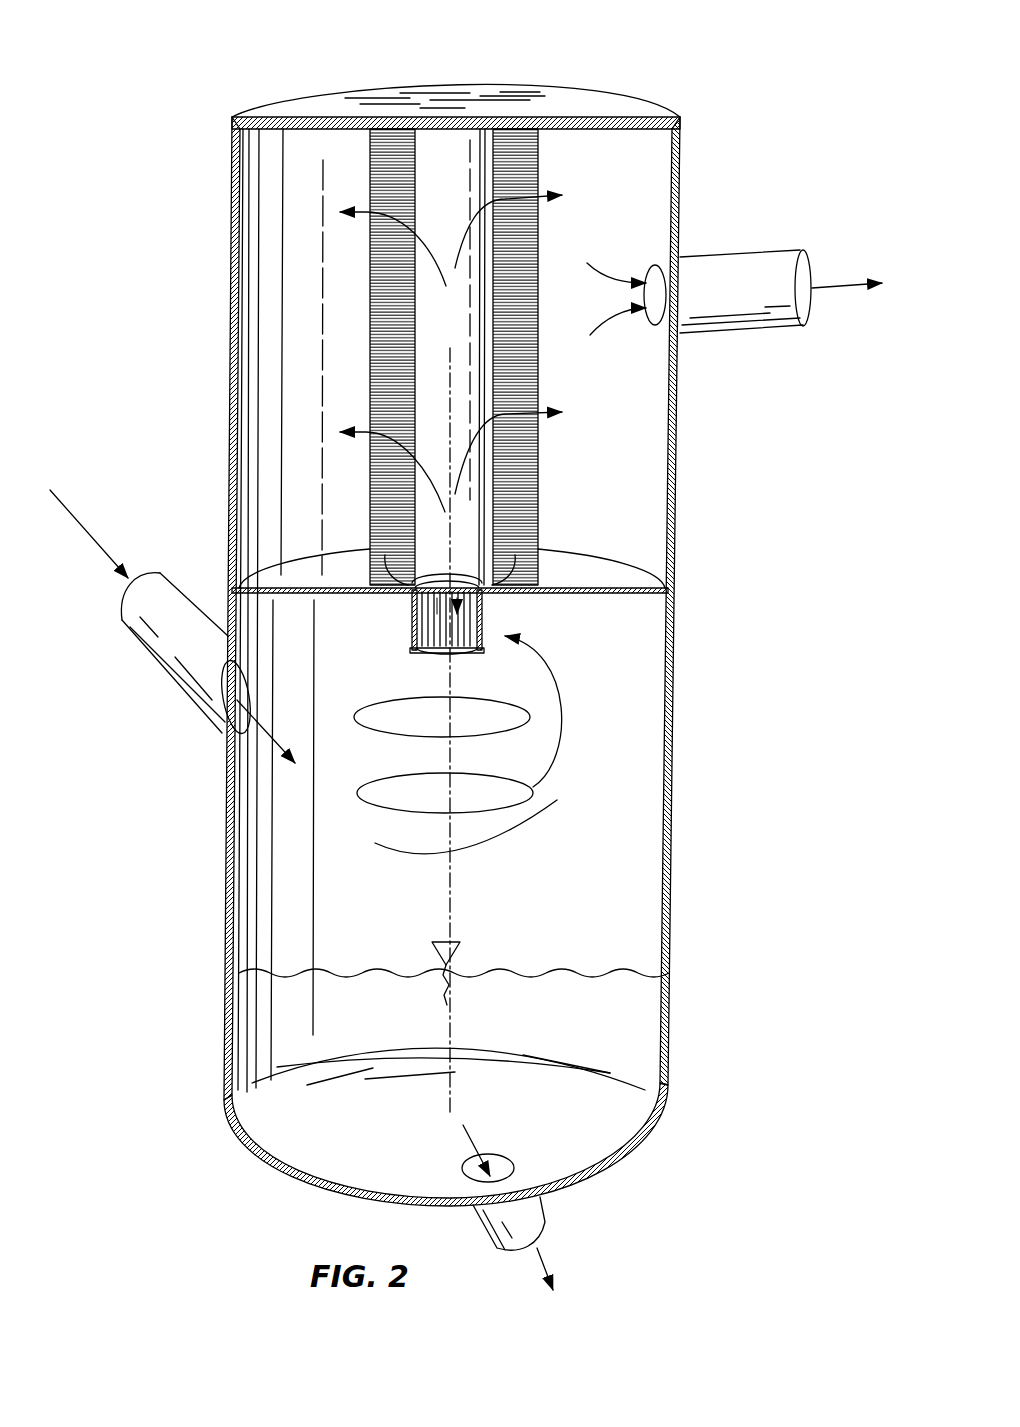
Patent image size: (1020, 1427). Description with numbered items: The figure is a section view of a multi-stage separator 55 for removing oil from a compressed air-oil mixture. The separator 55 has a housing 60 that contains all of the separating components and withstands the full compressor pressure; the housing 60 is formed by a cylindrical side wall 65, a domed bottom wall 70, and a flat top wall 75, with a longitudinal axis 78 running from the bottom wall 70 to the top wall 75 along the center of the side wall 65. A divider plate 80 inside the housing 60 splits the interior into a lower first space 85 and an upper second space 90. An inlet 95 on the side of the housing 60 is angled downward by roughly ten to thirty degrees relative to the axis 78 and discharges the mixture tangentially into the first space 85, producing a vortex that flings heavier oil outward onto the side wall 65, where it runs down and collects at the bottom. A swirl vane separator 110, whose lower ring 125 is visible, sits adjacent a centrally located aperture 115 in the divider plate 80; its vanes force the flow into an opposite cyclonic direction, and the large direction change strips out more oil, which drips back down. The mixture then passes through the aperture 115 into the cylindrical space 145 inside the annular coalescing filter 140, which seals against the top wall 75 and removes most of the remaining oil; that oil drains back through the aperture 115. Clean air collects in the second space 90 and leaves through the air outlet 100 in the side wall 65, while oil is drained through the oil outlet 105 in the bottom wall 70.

The multi-stage separator 55 is at (740, 104).
The housing 60 is at (218, 1034).
The cylindrical side wall 65 is at (228, 852).
The bottom wall 70 is at (648, 1150).
The top wall 75 is at (297, 92).
The longitudinal axis 78 is at (452, 905).
The divider plate 80 is at (622, 572).
The first space 85 is at (624, 710).
The second space 90 is at (268, 298).
The inlet 95 is at (134, 613).
The air outlet 100 is at (754, 263).
The oil outlet 105 is at (545, 1228).
The swirl vane separator 110 is at (413, 628).
The aperture 115 is at (462, 570).
The lower ring 125 is at (452, 655).
The coalescing filter 140 is at (520, 160).
The cylindrical space 145 is at (443, 182).